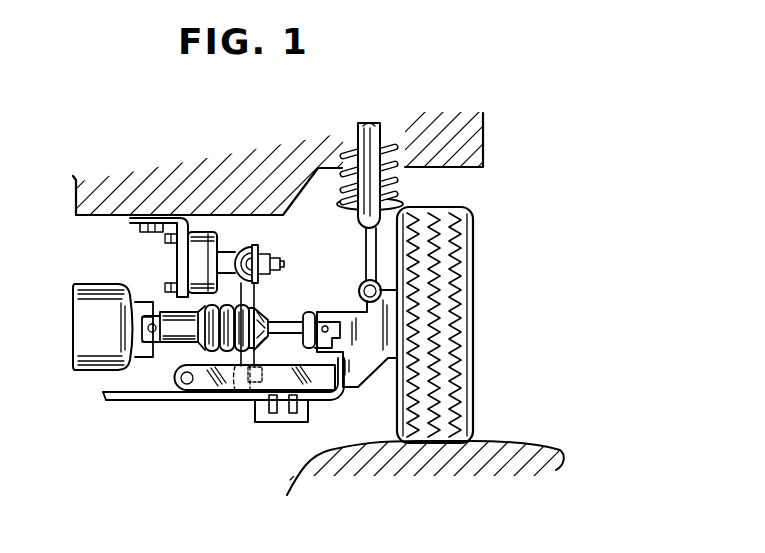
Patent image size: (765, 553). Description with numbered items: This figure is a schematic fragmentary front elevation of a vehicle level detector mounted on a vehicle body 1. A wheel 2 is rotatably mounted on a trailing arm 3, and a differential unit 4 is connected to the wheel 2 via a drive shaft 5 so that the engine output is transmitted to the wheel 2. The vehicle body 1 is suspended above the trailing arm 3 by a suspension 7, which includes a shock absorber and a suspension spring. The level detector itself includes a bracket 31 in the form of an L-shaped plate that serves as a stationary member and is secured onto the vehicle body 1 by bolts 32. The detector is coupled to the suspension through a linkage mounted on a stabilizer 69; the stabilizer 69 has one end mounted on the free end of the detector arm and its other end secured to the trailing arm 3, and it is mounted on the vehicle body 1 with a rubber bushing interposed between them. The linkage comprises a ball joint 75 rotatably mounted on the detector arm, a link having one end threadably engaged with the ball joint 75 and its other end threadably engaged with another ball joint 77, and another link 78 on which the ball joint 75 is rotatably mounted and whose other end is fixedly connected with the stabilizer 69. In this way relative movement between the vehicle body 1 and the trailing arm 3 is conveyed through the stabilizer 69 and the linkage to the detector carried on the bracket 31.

The vehicle body 1 is at (468, 133).
The wheel 2 is at (469, 285).
The trailing arm 3 is at (384, 362).
The differential unit 4 is at (88, 329).
The drive shaft 5 is at (178, 330).
The suspension 7 is at (379, 149).
The bracket 31 is at (158, 222).
The bolts 32 is at (148, 233).
The stabilizer 69 is at (327, 413).
The ball joint 75 is at (246, 255).
The ball joint 77 is at (247, 393).
The link 78 is at (277, 424).